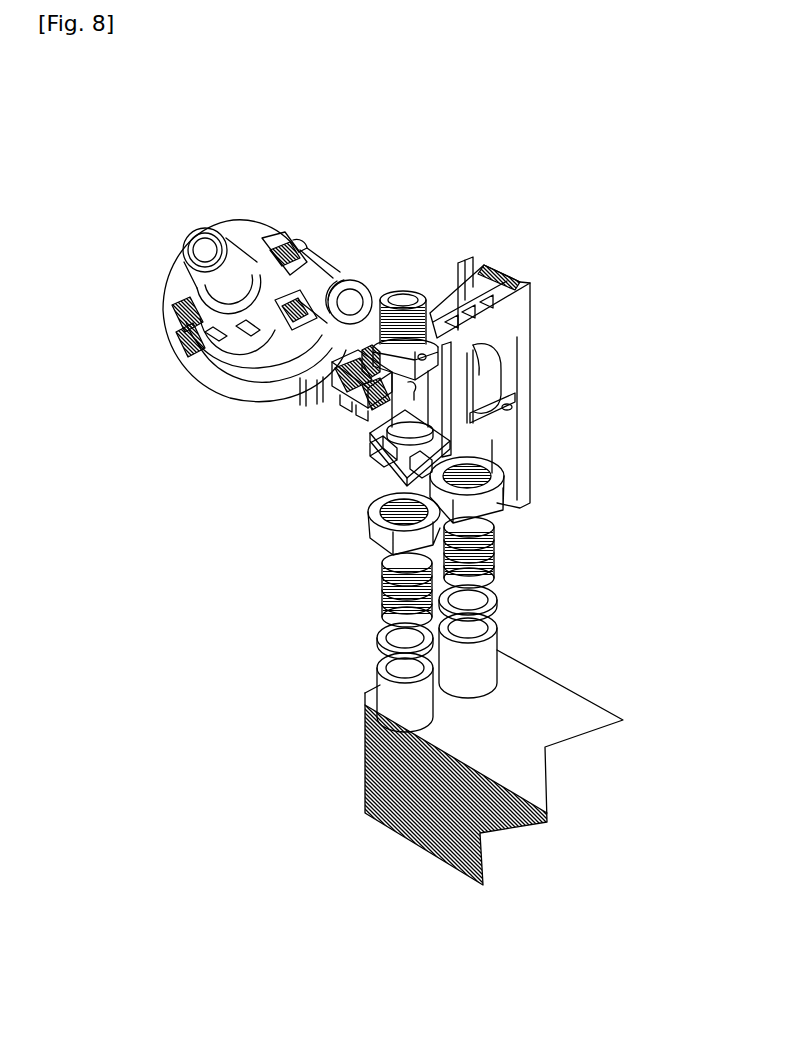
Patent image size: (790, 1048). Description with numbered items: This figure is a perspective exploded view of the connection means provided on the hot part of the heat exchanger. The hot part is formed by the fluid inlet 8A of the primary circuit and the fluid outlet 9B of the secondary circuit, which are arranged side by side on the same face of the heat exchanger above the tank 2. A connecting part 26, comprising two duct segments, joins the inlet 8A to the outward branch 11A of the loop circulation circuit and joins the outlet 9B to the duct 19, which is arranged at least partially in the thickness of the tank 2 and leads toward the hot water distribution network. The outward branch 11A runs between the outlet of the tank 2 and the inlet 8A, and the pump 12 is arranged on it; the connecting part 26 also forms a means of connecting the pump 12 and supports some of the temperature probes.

The pump 12 is at (195, 346).
The duct 19 is at (368, 415).
The outward branch 11A is at (333, 273).
The connecting part 26 is at (543, 298).
The fluid inlet 8A is at (493, 623).
The fluid outlet 9B is at (400, 667).
The tank 2 is at (413, 847).